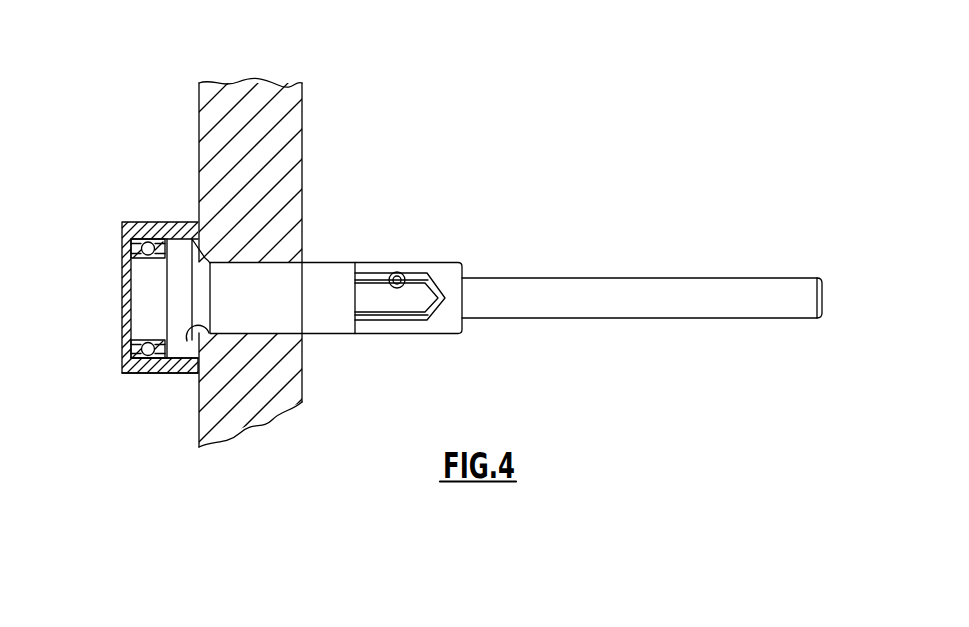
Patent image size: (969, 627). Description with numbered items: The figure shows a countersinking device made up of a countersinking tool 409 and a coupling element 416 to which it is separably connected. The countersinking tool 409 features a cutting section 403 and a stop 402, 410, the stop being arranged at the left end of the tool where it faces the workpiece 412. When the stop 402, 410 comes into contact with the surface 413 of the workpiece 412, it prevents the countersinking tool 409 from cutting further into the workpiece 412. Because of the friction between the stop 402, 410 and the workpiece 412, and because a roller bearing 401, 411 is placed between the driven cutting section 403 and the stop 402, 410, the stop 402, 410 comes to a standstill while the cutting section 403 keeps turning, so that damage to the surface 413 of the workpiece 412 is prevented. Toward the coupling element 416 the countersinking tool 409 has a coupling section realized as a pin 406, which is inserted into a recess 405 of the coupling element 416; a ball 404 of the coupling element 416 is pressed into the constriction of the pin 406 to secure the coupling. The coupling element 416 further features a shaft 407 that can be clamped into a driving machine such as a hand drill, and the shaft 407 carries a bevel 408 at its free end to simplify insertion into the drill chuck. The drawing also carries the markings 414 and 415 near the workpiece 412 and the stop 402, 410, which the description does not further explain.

The roller bearing 401 is at (147, 243).
The stop 402 is at (187, 227).
The cutting section 403 is at (202, 284).
The ball 404 is at (405, 252).
The recess 405 is at (438, 284).
The pin 406 is at (422, 300).
The shaft 407 is at (618, 302).
The bevel 408 is at (824, 268).
The countersinking tool 409 is at (335, 313).
The stop 410 is at (175, 363).
The roller bearing 411 is at (147, 350).
The workpiece 412 is at (267, 92).
The surface of the workpiece 413 is at (196, 82).
The second side of wall 414 is at (308, 126).
The direction of motion 415 is at (58, 173).
The coupling element 416 is at (667, 222).